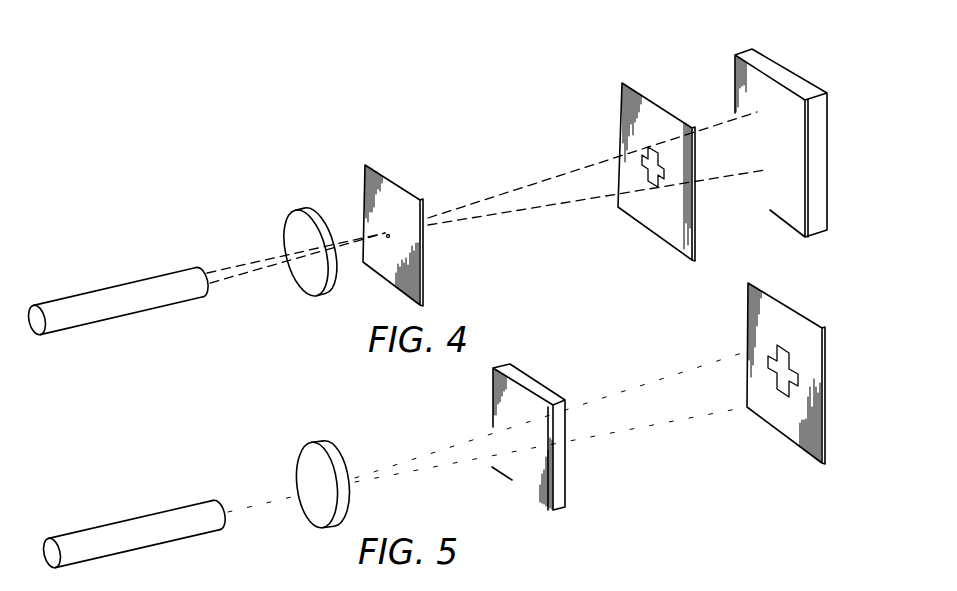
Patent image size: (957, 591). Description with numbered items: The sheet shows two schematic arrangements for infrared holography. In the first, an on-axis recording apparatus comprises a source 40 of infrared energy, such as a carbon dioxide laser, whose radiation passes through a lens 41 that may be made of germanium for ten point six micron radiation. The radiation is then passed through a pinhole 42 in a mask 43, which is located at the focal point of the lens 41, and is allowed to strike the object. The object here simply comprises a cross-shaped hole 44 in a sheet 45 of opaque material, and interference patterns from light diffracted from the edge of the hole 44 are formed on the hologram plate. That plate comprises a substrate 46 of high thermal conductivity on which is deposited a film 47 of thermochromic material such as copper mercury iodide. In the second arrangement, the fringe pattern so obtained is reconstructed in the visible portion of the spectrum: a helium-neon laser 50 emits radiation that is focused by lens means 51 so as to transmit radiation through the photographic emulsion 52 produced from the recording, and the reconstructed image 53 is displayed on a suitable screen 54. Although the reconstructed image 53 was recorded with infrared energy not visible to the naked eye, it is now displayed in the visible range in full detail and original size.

In FIG. 4, the source of infrared energy 40 is at (127, 282).
In FIG. 4, the lens 41 is at (297, 215).
In FIG. 4, the pinhole 42 is at (390, 229).
In FIG. 4, the mask 43 is at (378, 268).
In FIG. 4, the cross-shaped hole 44 is at (651, 149).
In FIG. 4, the sheet of opaque material 45 is at (638, 217).
In FIG. 4, the substrate 46 is at (793, 73).
In FIG. 4, the film of thermochromic material 47 is at (758, 197).
In FIG. 5, the helium-neon laser 50 is at (133, 520).
In FIG. 5, the lens means 51 is at (315, 460).
In FIG. 5, the photographic emulsion 52 is at (505, 470).
In FIG. 5, the reconstructed image 53 is at (782, 346).
In FIG. 5, the screen 54 is at (770, 422).